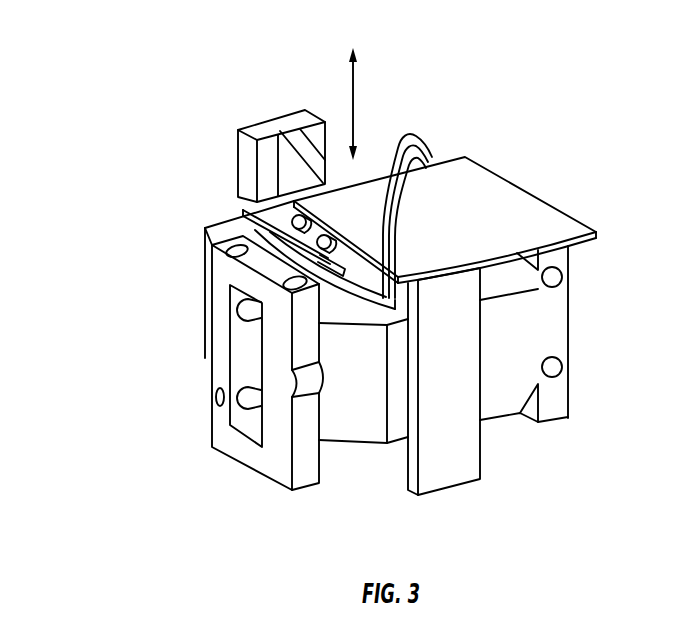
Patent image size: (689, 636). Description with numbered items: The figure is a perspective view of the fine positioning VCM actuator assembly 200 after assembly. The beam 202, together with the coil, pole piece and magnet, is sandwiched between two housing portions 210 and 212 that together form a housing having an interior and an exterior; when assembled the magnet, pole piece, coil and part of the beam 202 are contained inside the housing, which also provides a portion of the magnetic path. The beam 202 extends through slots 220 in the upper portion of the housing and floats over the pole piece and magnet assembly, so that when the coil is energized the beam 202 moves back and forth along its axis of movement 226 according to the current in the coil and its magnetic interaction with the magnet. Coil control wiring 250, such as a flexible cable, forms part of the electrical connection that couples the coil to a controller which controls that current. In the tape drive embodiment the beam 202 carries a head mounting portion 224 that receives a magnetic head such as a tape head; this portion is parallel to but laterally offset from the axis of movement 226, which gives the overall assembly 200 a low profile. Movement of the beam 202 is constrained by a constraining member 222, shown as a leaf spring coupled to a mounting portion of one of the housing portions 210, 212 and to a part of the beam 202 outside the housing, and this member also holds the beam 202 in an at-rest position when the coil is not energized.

The VCM actuator assembly 200 is at (113, 55).
The beam 202 is at (470, 463).
The housing portion 210 is at (343, 433).
The housing portion 212 is at (517, 287).
The slots 220 is at (243, 216).
The constraining member 222 is at (514, 190).
The head mounting portion 224 is at (267, 123).
The axis of movement 226 is at (351, 78).
The coil control wiring 250 is at (417, 171).